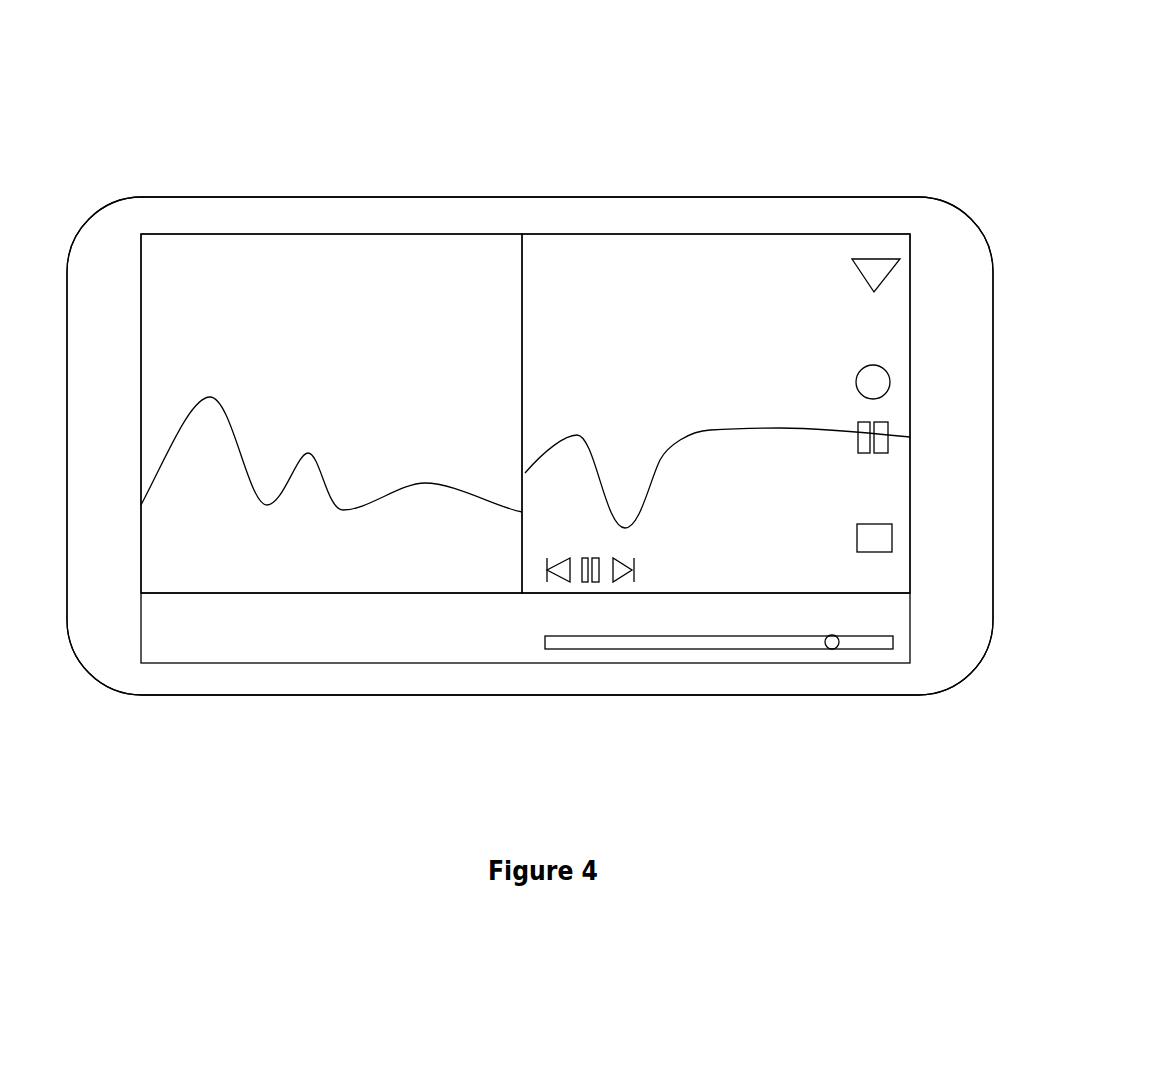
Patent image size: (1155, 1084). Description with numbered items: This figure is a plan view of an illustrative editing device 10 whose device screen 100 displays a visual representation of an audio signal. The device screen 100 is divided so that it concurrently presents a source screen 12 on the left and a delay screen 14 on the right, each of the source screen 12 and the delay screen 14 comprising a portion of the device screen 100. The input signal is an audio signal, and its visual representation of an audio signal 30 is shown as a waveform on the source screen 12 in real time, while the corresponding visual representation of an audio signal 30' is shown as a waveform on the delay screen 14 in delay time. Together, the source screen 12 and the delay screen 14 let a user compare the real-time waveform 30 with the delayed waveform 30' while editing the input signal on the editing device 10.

The editing device 10 is at (978, 170).
The device screen 100 is at (133, 297).
The source screen 12 is at (338, 253).
The delay screen 14 is at (628, 255).
The visual representation of an audio signal 30 is at (331, 595).
The visual representation of an audio signal 30' is at (717, 610).